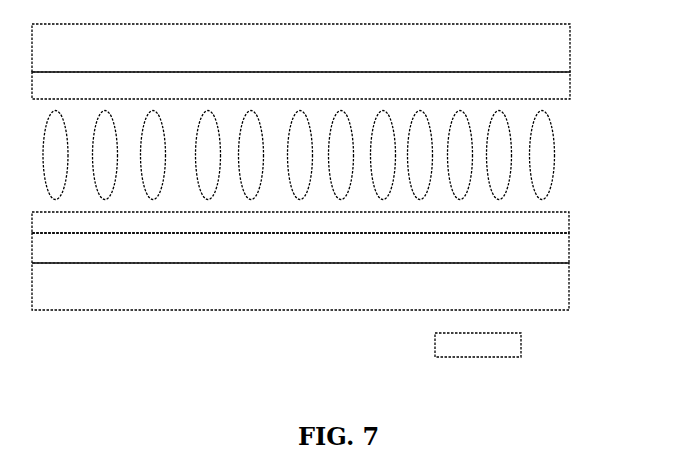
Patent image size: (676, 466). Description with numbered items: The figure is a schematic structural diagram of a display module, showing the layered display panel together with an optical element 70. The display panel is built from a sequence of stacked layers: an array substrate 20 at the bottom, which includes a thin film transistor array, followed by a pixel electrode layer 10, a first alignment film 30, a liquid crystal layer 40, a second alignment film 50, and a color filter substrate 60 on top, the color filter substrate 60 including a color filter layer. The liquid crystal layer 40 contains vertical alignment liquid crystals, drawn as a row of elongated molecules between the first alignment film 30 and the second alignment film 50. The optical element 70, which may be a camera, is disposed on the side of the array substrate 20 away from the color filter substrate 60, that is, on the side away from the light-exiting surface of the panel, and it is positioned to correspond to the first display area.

The pixel electrode layer 10 is at (562, 252).
The array substrate 20 is at (562, 287).
The first alignment film 30 is at (562, 222).
The liquid crystal layer 40 is at (555, 153).
The second alignment film 50 is at (564, 88).
The color filter substrate 60 is at (564, 52).
The optical element 70 is at (508, 345).